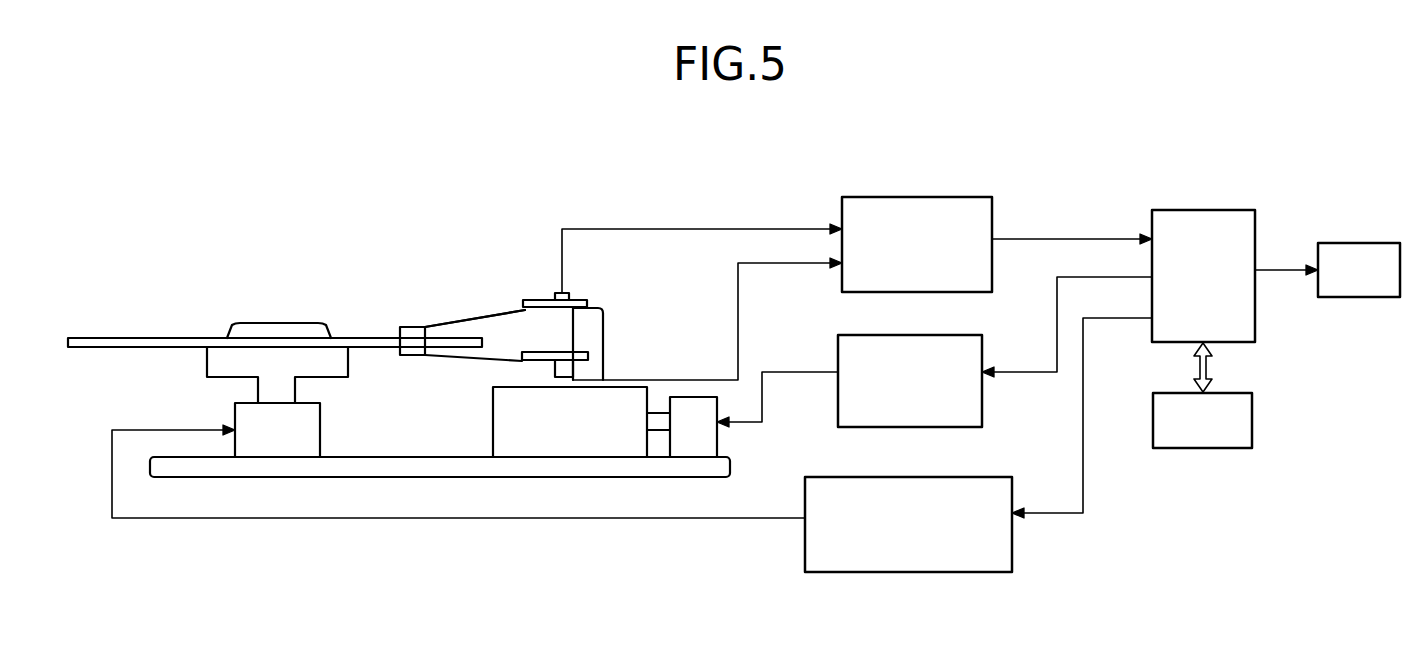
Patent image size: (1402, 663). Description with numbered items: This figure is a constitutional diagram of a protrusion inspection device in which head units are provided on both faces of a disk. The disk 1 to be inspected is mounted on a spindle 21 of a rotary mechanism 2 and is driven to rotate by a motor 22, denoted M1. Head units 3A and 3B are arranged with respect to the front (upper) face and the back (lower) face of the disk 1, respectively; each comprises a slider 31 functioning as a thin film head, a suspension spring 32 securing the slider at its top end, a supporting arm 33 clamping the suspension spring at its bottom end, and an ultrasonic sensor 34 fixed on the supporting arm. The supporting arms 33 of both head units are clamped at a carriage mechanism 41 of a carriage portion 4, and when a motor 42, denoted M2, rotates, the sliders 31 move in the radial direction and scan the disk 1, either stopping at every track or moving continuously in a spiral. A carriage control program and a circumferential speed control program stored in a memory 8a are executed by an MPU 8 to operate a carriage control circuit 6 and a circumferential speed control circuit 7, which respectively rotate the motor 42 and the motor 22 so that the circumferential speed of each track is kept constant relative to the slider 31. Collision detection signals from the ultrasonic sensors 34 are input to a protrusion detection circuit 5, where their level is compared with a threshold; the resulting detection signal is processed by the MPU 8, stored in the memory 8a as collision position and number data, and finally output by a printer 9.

The disk 1 is at (112, 338).
The rotary mechanism 2 is at (100, 417).
The spindle 21 is at (207, 362).
The motor (M1) 22 is at (320, 427).
The head unit 3A is at (458, 238).
The head unit 3B is at (466, 367).
The slider 31 is at (400, 326).
The suspension spring 32 is at (460, 318).
The supporting arm 33 is at (527, 300).
The ultrasonic sensor 34 is at (556, 352).
The carriage portion 4 is at (682, 364).
The carriage mechanism 41 is at (522, 457).
The motor (M2) 42 is at (696, 457).
The protrusion detection circuit 5 is at (912, 197).
The carriage control circuit 6 is at (848, 401).
The circumferential speed control circuit 7 is at (940, 572).
The MPU 8 is at (1208, 210).
The memory (MEM) 8a is at (1210, 449).
The printer (PRT) 9 is at (1372, 243).